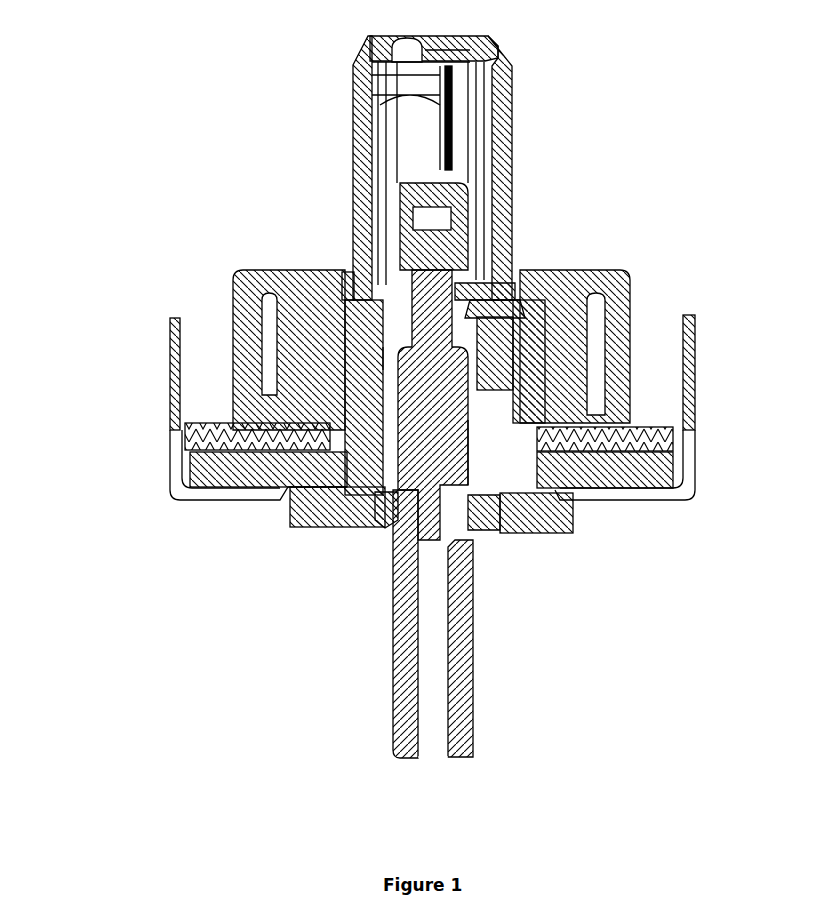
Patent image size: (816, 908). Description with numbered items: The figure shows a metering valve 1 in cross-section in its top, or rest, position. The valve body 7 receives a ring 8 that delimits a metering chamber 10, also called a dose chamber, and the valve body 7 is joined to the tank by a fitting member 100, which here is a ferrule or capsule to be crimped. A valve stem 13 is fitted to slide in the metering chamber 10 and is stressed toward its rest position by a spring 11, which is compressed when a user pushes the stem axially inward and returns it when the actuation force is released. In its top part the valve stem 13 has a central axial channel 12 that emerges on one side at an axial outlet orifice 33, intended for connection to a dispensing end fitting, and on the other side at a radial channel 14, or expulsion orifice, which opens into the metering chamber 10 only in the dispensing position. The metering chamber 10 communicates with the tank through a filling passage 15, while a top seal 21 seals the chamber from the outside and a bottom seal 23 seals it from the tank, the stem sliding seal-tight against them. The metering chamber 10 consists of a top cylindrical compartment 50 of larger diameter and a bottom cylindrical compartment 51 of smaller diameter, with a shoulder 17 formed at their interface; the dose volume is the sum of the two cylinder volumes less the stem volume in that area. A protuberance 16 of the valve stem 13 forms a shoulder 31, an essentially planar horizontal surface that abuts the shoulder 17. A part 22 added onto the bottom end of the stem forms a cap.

The valve 1 is at (180, 515).
The valve body 7 is at (493, 52).
The ring 8 is at (498, 367).
The metering chamber 10 is at (383, 430).
The spring 11 is at (500, 148).
The central axial channel 12 is at (430, 685).
The valve stem 13 is at (478, 668).
The radial channel 14 is at (477, 522).
The filling passage 15 is at (462, 300).
The protuberance 16 is at (386, 490).
The shoulder 17 is at (382, 385).
The top seal 21 is at (490, 512).
The part 22 is at (405, 190).
The bottom seal 23 is at (466, 312).
The shoulder 31 is at (467, 476).
The axial outlet orifice 33 is at (435, 757).
The top cylindrical compartment 50 is at (386, 418).
The bottom cylindrical compartment 51 is at (392, 358).
The fitting member 100 is at (178, 318).